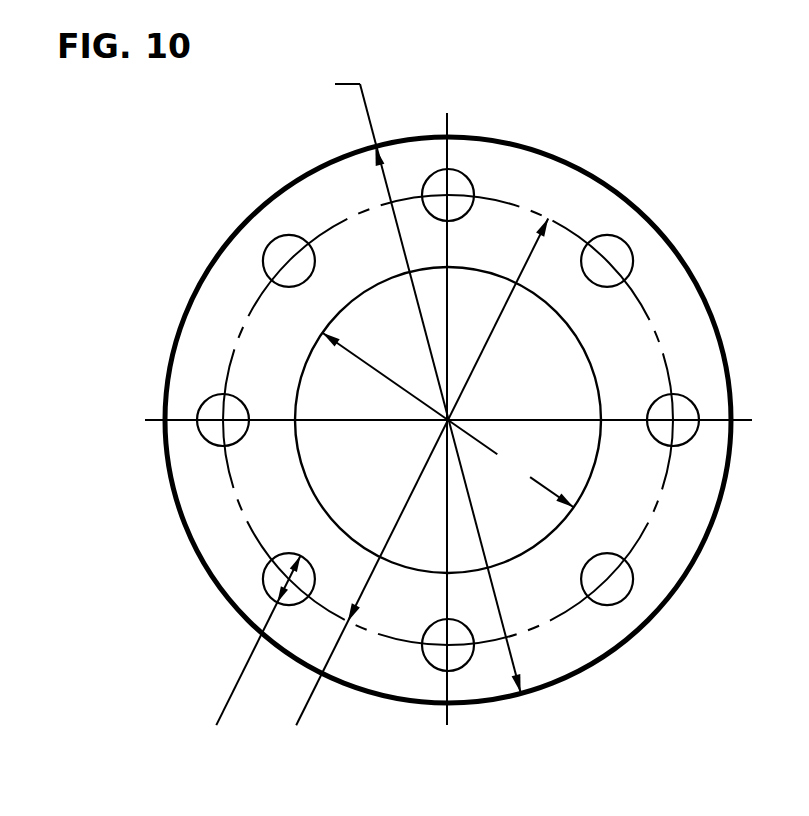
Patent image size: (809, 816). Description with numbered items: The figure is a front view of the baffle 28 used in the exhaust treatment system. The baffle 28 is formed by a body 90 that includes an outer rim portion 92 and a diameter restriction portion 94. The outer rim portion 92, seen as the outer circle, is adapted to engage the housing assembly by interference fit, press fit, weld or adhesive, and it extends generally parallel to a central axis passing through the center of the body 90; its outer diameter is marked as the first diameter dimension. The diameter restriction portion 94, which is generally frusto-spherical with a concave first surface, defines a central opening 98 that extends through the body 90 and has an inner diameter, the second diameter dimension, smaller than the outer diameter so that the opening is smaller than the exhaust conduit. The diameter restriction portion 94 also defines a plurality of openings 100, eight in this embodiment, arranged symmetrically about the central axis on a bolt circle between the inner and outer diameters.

The baffle 28 is at (240, 177).
The body 90 is at (197, 583).
The outer rim portion 92 is at (532, 142).
The diameter restriction portion 94 is at (693, 528).
The central opening 98 is at (560, 317).
The plurality of openings 100 is at (428, 660).